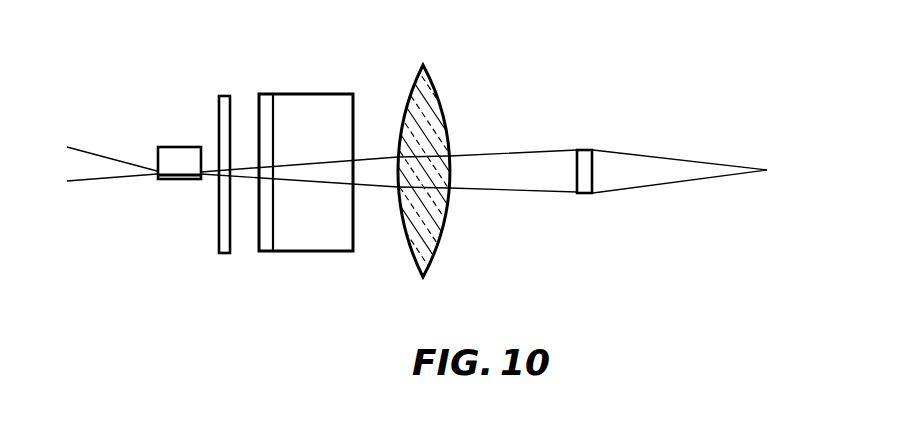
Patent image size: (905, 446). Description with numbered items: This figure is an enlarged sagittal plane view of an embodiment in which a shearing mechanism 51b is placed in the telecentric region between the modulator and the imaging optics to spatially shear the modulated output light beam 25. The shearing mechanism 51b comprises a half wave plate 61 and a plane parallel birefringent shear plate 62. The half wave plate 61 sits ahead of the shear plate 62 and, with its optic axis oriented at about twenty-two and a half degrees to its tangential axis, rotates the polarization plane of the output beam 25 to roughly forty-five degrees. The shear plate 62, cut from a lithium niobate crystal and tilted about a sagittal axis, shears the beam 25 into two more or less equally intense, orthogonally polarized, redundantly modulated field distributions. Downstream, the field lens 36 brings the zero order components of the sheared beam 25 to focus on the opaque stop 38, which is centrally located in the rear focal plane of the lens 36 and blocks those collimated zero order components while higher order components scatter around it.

The light beam 25 is at (209, 172).
The shearing mechanism 51b is at (251, 266).
The half wave plate 61 is at (218, 109).
The plane parallel birefringent shear plate 62 is at (308, 93).
The field lens 36 is at (446, 109).
The opaque stop 38 is at (594, 160).